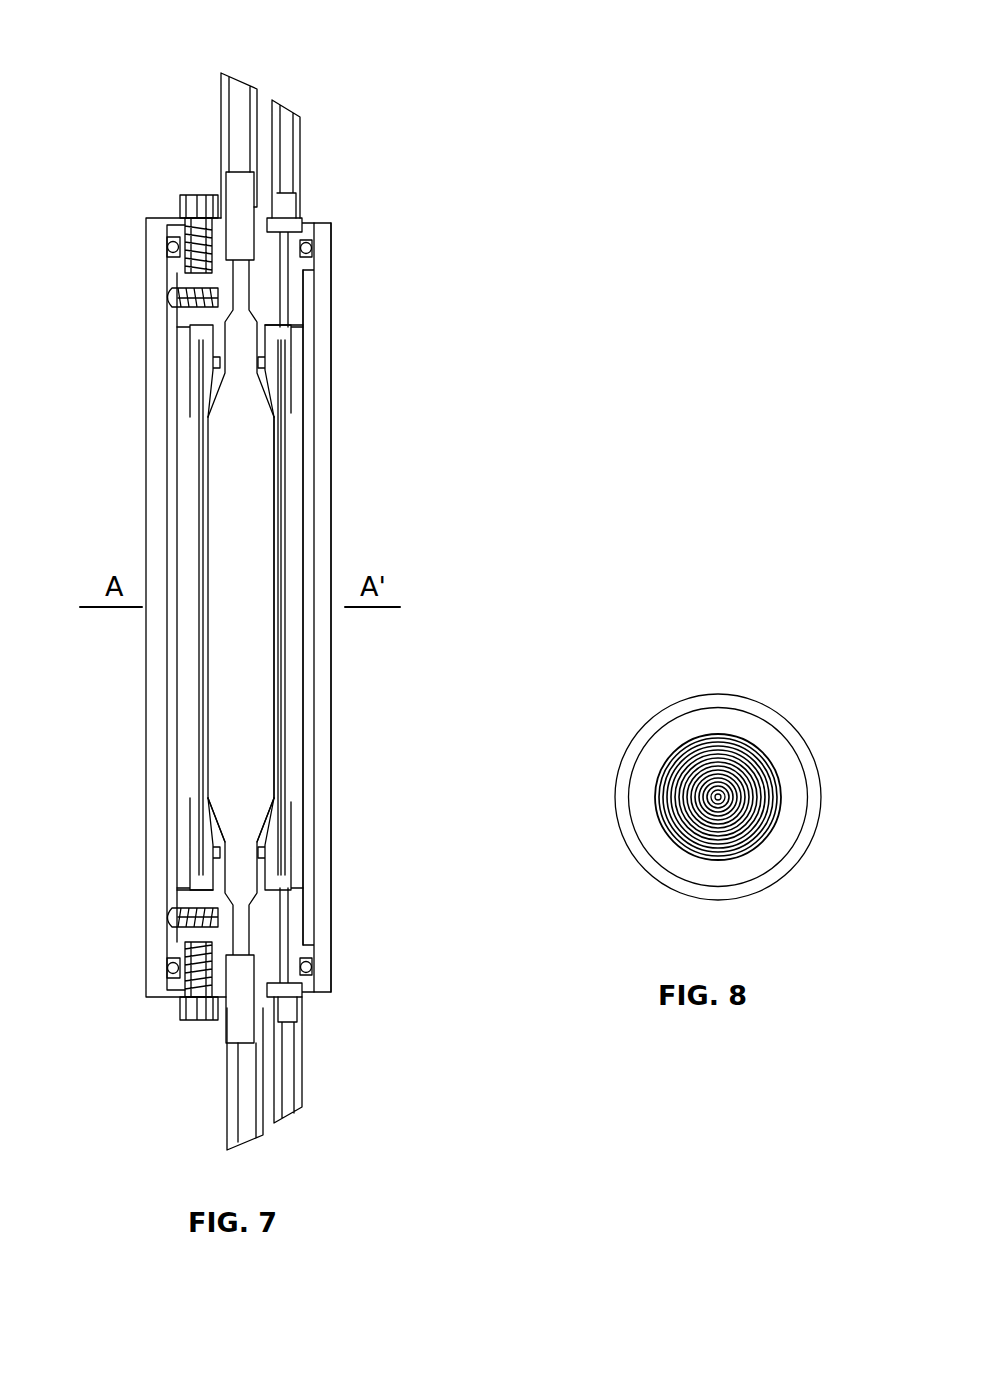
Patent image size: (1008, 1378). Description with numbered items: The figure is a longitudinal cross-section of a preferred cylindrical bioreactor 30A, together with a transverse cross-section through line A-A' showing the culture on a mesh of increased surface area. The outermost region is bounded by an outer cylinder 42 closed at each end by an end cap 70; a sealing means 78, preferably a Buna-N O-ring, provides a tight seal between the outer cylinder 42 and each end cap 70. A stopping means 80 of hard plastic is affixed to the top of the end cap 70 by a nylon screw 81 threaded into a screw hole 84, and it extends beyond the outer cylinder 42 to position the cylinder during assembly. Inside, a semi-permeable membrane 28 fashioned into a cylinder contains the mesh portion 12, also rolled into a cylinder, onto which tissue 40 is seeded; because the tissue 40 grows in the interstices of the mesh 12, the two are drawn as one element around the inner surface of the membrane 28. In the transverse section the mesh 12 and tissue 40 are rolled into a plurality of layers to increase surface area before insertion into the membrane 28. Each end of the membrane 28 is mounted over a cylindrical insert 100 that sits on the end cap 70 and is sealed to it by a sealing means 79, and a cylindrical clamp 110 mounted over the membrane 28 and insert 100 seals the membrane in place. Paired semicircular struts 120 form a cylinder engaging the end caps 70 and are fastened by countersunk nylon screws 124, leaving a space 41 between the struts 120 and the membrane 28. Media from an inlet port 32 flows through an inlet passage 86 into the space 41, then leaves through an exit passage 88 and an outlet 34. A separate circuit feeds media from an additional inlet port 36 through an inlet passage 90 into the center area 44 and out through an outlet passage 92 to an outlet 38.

In FIG. 7, the mesh portion 12 is at (198, 607).
In FIG. 7, the semi-permeable membrane 28 is at (288, 592).
In FIG. 8, the semi-permeable membrane 28 is at (685, 744).
In FIG. 7, the cylindrical bioreactor 30A is at (457, 396).
In FIG. 7, the inlet port 32 is at (288, 104).
In FIG. 7, the outlet 34 is at (305, 1100).
In FIG. 7, the additional inlet port 36 is at (238, 75).
In FIG. 7, the outlet 38 is at (222, 1075).
In FIG. 7, the tissue 40 is at (214, 545).
In FIG. 8, the tissue 40 is at (767, 818).
In FIG. 7, the space 41 is at (292, 440).
In FIG. 8, the space 41 is at (731, 864).
In FIG. 7, the outer cylinder 42 is at (329, 547).
In FIG. 8, the outer cylinder 42 is at (714, 896).
In FIG. 7, the center area 44 is at (249, 657).
In FIG. 8, the center area 44 is at (729, 797).
In FIG. 7, the end caps 70 is at (265, 250).
In FIG. 7, the sealing means 78 is at (304, 244).
In FIG. 7, the sealing means 79 is at (298, 848).
In FIG. 7, the stopping means 80 is at (173, 216).
In FIG. 7, the screw 81 is at (199, 195).
In FIG. 7, the screw hole 84 is at (170, 987).
In FIG. 7, the inlet passage 86 is at (300, 330).
In FIG. 7, the exit passage 88 is at (311, 970).
In FIG. 7, the inlet passage 90 is at (208, 218).
In FIG. 7, the outlet passage 92 is at (236, 905).
In FIG. 7, the cylindrical insert 100 is at (271, 802).
In FIG. 7, the cylindrical clamp 110 is at (297, 356).
In FIG. 7, the struts 120 is at (311, 497).
In FIG. 7, the screws 124 is at (222, 295).